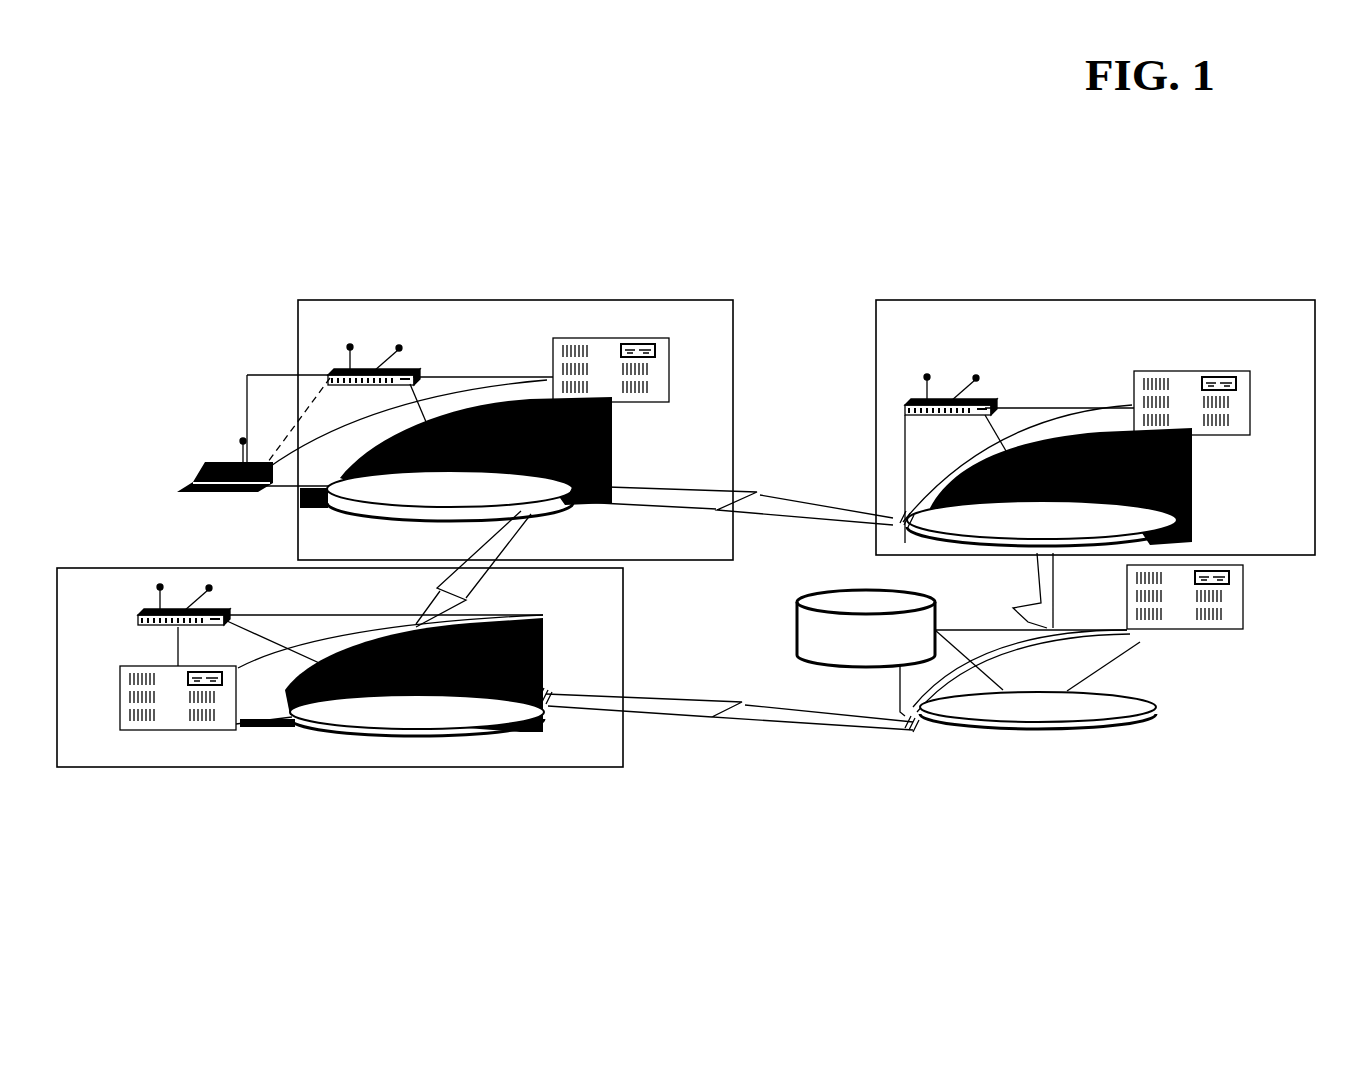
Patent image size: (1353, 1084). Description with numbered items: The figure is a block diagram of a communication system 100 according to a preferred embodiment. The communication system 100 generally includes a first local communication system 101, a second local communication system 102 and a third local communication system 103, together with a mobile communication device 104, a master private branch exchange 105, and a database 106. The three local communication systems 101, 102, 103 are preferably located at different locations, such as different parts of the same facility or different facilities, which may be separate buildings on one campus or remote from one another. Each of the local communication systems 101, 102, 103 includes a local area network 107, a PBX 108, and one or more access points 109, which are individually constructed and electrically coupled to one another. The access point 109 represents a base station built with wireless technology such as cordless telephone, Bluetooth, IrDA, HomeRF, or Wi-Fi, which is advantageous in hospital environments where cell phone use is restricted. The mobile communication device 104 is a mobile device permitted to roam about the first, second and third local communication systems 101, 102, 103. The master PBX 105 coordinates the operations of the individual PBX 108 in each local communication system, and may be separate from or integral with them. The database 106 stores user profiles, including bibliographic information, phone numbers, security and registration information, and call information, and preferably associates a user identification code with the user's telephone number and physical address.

The communication system 100 is at (297, 171).
The first local communication system 101 is at (490, 409).
The second local communication system 102 is at (1095, 408).
The third local communication system 103 is at (340, 698).
The mobile communication device (MCD) 104 is at (180, 475).
The master private branch exchange (PBX) 105 is at (1228, 605).
The database 106 is at (817, 628).
The local area network 107 is at (450, 517).
The PBX 108 is at (611, 365).
The access point 109 is at (374, 361).